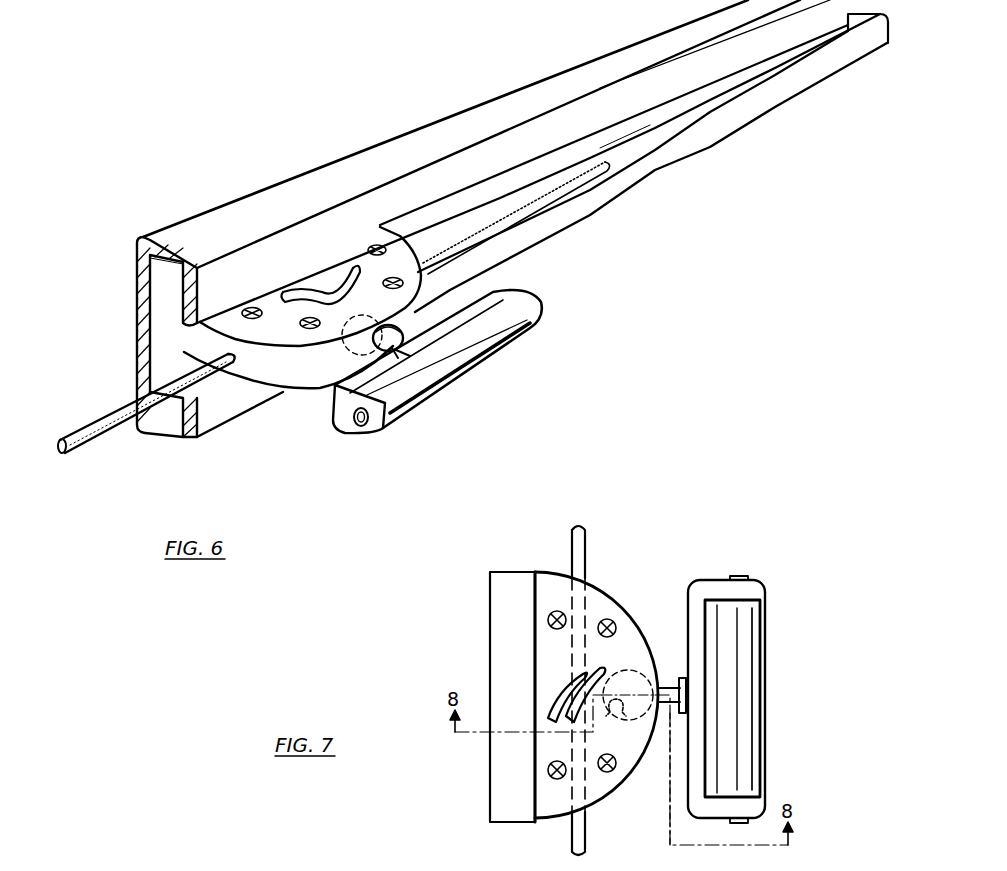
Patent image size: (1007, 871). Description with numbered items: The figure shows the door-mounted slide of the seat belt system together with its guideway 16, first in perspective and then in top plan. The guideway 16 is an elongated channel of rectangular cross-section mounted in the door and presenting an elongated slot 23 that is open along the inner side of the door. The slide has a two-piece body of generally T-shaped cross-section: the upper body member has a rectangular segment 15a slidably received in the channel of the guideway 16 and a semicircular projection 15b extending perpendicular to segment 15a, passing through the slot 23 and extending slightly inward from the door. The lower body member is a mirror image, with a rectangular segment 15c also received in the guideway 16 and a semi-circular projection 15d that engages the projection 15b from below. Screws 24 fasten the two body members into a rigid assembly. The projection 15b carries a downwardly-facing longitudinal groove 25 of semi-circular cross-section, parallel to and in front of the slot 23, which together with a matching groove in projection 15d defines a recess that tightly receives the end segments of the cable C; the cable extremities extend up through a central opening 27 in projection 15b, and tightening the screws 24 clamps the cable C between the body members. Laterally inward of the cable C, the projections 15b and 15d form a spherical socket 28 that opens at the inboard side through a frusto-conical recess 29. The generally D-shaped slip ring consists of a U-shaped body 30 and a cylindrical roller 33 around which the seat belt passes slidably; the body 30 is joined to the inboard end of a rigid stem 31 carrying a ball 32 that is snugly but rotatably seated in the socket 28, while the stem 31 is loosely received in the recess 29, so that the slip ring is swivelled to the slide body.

In FIG. 6, the guideway 16 is at (222, 216).
In FIG. 7, the guideway 16 is at (492, 588).
In FIG. 6, the rectangular segment 15a is at (165, 298).
In FIG. 6, the rectangular segment 15c is at (162, 351).
In FIG. 6, the semicircular projection 15b is at (284, 355).
In FIG. 7, the semicircular projection 15b is at (597, 598).
In FIG. 6, the semi-circular projection 15d is at (308, 384).
In FIG. 6, the slot 23 is at (625, 133).
In FIG. 6, the screws 24 is at (392, 277).
In FIG. 7, the screws 24 is at (612, 620).
In FIG. 6, the longitudinal groove 25 is at (245, 366).
In FIG. 6, the central opening 27 is at (328, 290).
In FIG. 7, the central opening 27 is at (571, 682).
In FIG. 6, the spherical socket 28 is at (403, 340).
In FIG. 7, the spherical socket 28 is at (617, 718).
In FIG. 7, the frusto-conical recess 29 is at (663, 722).
In FIG. 6, the U-shaped body 30 is at (518, 298).
In FIG. 7, the U-shaped body 30 is at (707, 592).
In FIG. 6, the stem 31 is at (410, 352).
In FIG. 7, the stem 31 is at (670, 680).
In FIG. 6, the ball 32 is at (366, 313).
In FIG. 7, the ball 32 is at (627, 673).
In FIG. 6, the cylindrical roller 33 is at (402, 414).
In FIG. 7, the cylindrical roller 33 is at (766, 660).
In FIG. 6, the cable C is at (97, 437).
In FIG. 7, the cable C is at (582, 543).